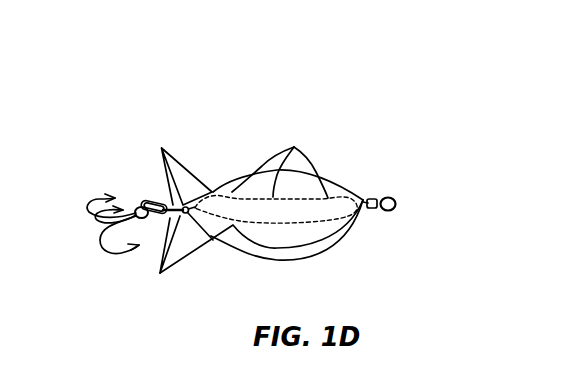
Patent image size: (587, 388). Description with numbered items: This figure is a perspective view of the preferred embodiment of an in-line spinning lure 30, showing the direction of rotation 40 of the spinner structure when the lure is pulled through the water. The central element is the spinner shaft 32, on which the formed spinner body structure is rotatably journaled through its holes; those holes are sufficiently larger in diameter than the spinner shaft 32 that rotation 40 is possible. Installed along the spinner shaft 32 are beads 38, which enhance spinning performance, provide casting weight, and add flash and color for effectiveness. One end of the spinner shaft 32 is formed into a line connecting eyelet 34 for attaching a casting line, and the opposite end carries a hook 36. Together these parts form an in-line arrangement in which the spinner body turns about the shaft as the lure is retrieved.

The in-line spinning lure 30 is at (339, 170).
The spinner shaft 32 is at (170, 214).
The line connecting eyelet 34 is at (395, 204).
The hook 36 is at (97, 240).
The beads 38 is at (295, 145).
The rotation 40 is at (200, 146).